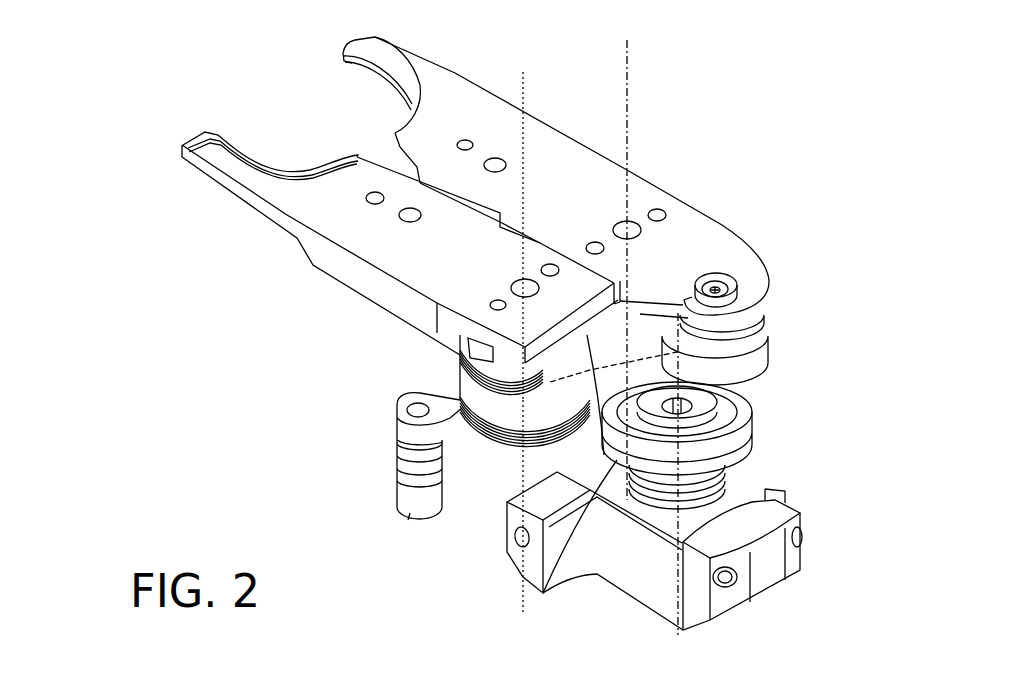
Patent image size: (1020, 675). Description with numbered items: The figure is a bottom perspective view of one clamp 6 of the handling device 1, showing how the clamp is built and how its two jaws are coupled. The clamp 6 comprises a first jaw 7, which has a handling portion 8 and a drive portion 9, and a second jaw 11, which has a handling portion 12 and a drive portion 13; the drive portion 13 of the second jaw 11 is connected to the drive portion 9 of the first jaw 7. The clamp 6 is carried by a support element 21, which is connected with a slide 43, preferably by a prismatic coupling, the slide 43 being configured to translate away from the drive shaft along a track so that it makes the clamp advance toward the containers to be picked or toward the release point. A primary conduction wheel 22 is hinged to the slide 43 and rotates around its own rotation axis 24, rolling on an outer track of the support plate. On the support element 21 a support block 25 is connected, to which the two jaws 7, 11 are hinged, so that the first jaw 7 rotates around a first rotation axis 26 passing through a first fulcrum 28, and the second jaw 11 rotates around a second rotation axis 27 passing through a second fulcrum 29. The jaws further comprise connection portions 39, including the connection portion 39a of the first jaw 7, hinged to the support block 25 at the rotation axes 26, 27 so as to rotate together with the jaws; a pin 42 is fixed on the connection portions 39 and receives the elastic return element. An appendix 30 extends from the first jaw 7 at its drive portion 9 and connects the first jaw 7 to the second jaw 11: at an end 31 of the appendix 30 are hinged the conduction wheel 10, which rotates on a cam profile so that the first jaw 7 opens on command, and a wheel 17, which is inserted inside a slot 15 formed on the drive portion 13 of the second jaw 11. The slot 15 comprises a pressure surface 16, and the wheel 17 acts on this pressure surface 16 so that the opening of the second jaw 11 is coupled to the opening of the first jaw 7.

The handling device 1 is at (222, 432).
The clamp 6 is at (183, 77).
The first jaw 7 is at (423, 272).
The handling portion 8 is at (285, 146).
The drive portion 9 is at (481, 388).
The conduction wheel 10 is at (768, 362).
The second jaw 11 is at (548, 163).
The handling portion 12 is at (440, 50).
The drive portion 13 is at (758, 263).
The slot 15 is at (556, 362).
The pressure surface 16 is at (692, 297).
The wheel 17 is at (717, 287).
The support element 21 is at (630, 574).
The primary conduction wheel 22 is at (752, 440).
The rotation axis 24 is at (688, 633).
The support block 25 is at (515, 392).
The first rotation axis 26 is at (525, 78).
The second rotation axis 27 is at (628, 67).
The first fulcrum 28 is at (514, 279).
The second fulcrum 29 is at (636, 221).
The appendix 30 is at (537, 520).
The end 31 is at (782, 322).
The connection portions 39 is at (397, 439).
The connection portion 39a is at (418, 410).
The pin 42 is at (459, 386).
The slide 43 is at (800, 512).